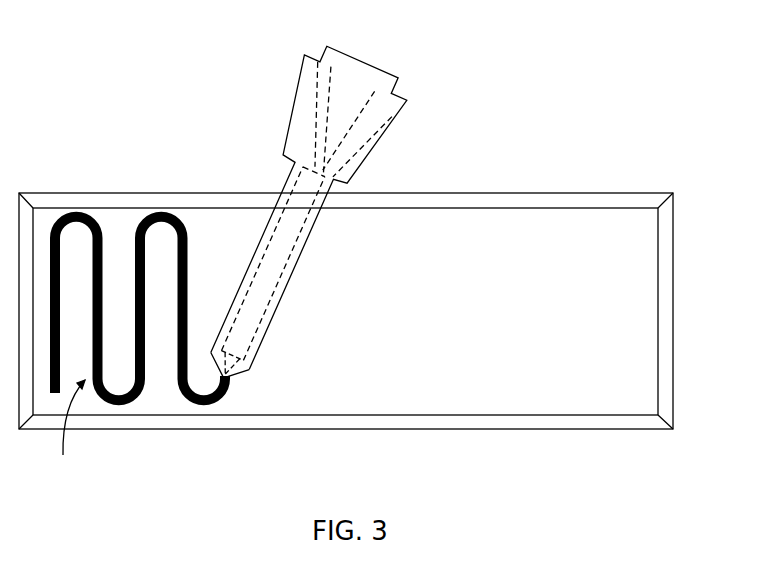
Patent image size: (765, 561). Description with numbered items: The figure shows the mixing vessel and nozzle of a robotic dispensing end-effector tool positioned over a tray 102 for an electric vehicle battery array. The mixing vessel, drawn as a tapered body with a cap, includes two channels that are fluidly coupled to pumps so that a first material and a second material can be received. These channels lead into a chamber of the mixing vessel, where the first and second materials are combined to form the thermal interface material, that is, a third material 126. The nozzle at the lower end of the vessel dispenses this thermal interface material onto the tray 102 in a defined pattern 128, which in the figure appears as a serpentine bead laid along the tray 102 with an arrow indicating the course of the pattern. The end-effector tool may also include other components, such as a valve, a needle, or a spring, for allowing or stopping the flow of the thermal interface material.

The tray 102 is at (558, 428).
The third material 126 is at (98, 229).
The defined pattern 128 is at (71, 431).